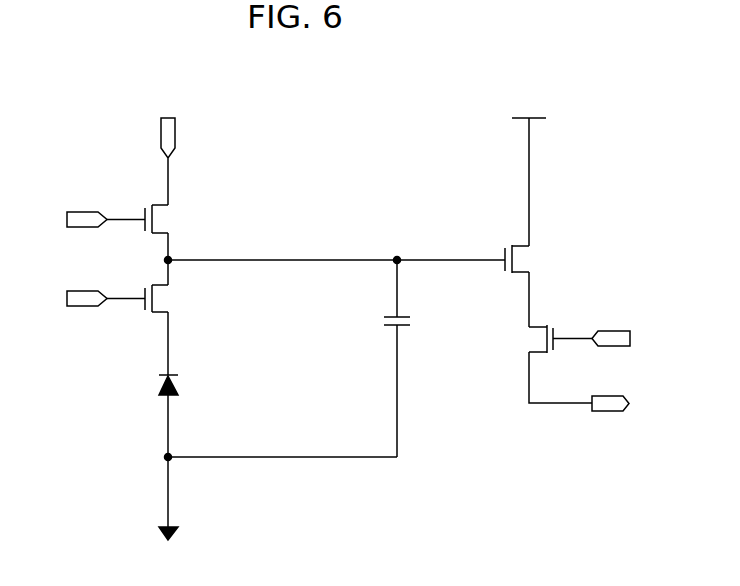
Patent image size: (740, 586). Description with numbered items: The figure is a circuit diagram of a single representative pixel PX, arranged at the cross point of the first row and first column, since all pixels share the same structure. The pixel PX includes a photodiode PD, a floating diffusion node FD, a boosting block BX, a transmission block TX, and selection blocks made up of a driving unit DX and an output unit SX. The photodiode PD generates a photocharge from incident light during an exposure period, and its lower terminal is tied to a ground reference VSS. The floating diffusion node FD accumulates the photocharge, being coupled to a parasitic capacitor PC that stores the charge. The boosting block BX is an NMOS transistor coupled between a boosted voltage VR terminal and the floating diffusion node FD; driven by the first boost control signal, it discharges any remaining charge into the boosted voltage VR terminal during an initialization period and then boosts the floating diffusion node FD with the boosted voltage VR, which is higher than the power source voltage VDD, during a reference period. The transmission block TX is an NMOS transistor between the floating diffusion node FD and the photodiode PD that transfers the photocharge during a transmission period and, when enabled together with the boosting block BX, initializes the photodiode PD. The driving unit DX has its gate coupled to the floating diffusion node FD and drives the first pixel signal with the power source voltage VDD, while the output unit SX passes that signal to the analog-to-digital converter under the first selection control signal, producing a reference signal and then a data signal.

The pixel PX is at (73, 80).
The boosted voltage VR is at (170, 148).
The power source voltage VDD is at (529, 169).
The boosting block BX is at (147, 220).
The transmission block TX is at (147, 299).
The photodiode PD is at (182, 387).
The ground voltage terminal VSS is at (169, 547).
The floating diffusion node FD is at (411, 272).
The parasitic capacitor PC is at (409, 358).
The driving unit DX is at (528, 260).
The output unit SX is at (549, 339).